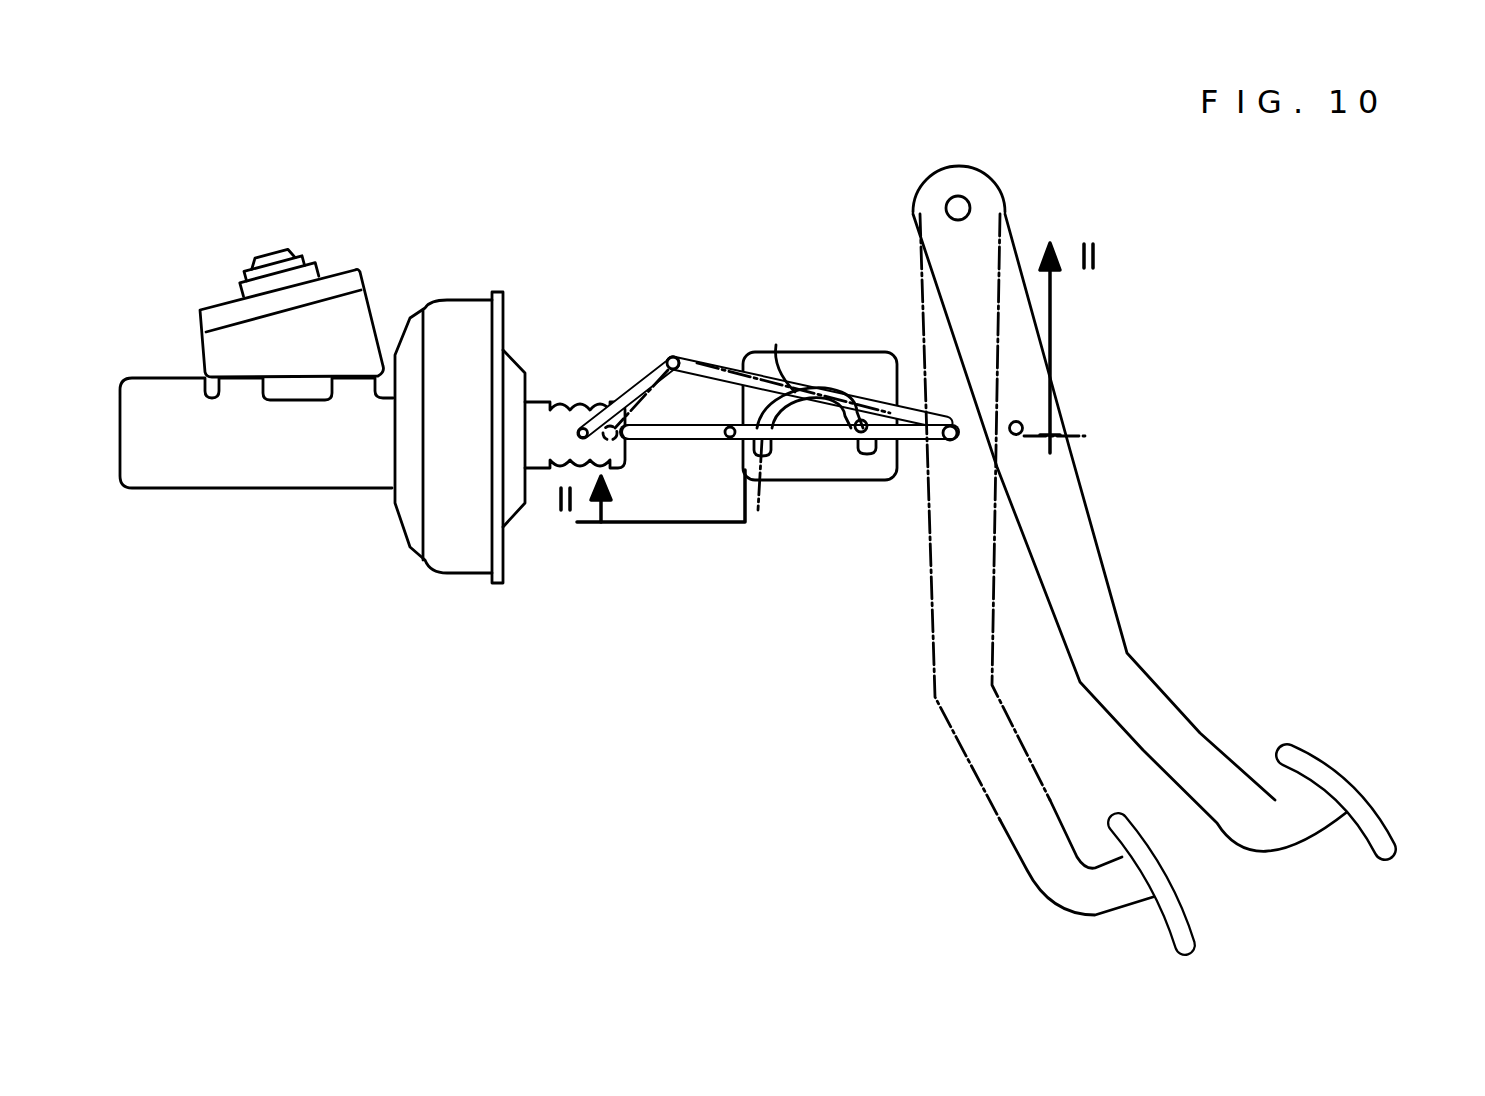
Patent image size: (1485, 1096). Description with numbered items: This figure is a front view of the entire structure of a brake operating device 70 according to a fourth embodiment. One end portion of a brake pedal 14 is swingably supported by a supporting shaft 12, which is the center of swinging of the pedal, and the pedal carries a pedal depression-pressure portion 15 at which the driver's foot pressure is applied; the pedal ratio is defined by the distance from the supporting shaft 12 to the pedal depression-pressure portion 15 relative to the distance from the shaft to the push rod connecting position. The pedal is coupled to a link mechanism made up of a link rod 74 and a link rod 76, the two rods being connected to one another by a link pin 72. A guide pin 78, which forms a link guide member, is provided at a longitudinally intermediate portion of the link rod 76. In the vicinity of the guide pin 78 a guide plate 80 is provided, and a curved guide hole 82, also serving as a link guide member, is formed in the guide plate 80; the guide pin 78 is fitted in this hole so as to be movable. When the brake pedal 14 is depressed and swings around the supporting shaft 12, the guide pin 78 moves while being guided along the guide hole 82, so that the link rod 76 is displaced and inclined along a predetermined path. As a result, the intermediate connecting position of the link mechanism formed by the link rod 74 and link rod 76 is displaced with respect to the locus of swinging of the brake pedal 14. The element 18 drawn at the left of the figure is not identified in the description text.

The supporting shaft 12 is at (960, 196).
The brake pedal 14 is at (1043, 338).
The pedal depression-pressure portion 15 is at (1385, 797).
The master cylinder and booster 18 is at (400, 238).
The brake operating device 70 is at (671, 228).
The link pin 72 is at (672, 357).
The link rod 74 is at (642, 382).
The link rod 76 is at (714, 363).
The guide pin 78 is at (776, 345).
The guide plate 80 is at (877, 481).
The guide hole 82 is at (758, 510).